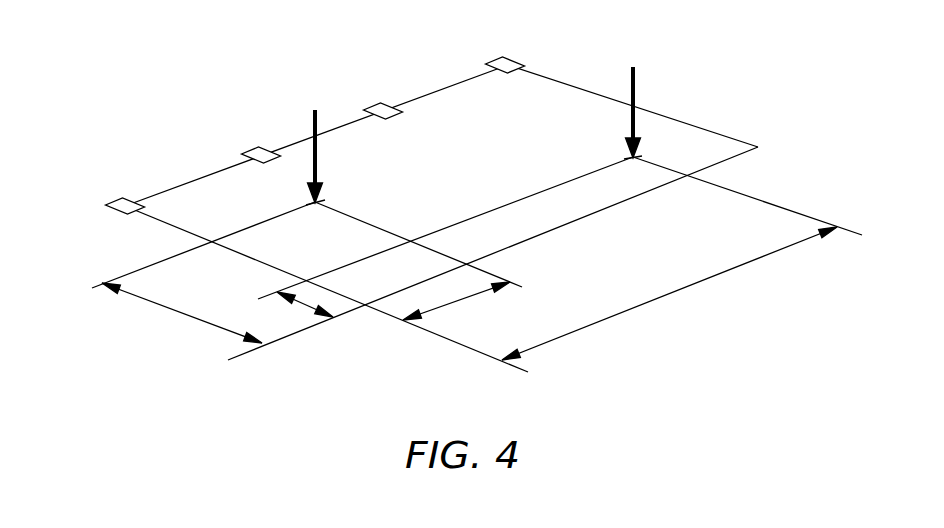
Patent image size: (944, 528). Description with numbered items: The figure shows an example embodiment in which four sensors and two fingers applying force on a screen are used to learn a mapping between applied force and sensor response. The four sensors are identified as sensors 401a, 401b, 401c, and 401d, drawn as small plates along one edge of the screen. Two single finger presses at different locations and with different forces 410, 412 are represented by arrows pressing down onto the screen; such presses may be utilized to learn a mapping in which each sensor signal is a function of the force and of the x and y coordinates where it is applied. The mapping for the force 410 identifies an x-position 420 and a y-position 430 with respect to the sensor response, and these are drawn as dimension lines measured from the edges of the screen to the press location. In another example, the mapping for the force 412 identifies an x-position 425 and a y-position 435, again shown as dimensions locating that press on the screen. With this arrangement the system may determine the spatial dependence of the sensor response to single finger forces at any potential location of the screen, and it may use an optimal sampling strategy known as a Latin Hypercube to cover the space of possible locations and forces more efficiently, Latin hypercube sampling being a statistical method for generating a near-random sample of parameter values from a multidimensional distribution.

The sensor 401a is at (486, 60).
The sensor 401b is at (367, 101).
The sensor 401c is at (247, 148).
The sensor 401d is at (113, 199).
The force 410 is at (318, 146).
The force 412 is at (628, 115).
The x-position 420 is at (180, 313).
The x-position 425 is at (303, 307).
The y-position 430 is at (450, 302).
The y-position 435 is at (670, 295).